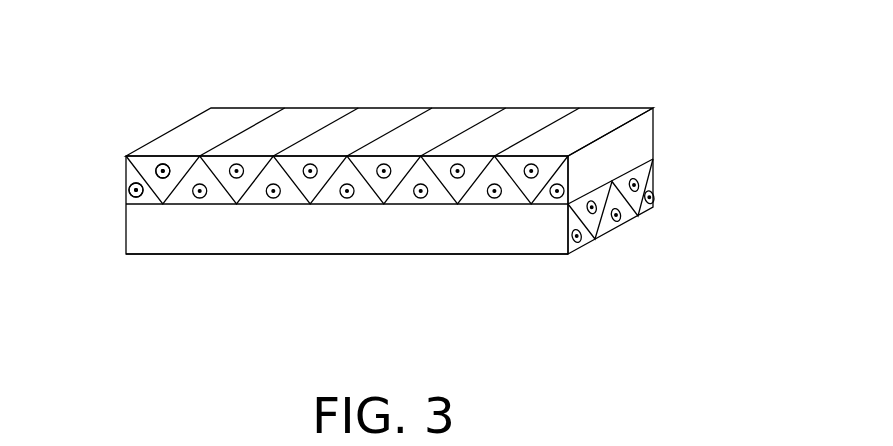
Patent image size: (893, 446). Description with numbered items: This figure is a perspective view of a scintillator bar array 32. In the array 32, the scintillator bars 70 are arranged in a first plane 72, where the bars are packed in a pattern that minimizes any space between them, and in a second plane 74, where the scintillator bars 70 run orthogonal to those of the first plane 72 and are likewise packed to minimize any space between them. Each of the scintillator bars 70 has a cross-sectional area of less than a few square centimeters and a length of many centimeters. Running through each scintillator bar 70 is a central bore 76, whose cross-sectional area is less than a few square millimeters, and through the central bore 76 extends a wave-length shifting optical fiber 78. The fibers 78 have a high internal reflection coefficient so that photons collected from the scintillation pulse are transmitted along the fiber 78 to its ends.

The scintillator bar array 32 is at (674, 70).
The scintillator bars 70 is at (473, 118).
The first plane 72 is at (396, 72).
The second plane 74 is at (634, 253).
The central bore 76 is at (164, 164).
The wave-length shifting optical fiber 78 is at (129, 189).